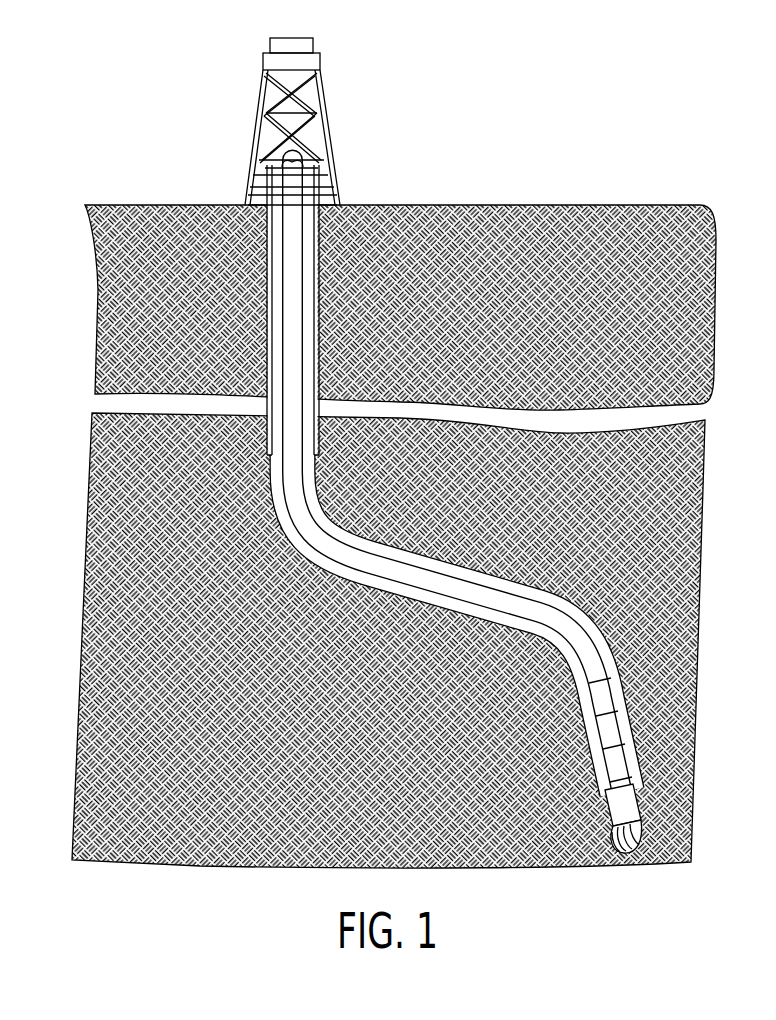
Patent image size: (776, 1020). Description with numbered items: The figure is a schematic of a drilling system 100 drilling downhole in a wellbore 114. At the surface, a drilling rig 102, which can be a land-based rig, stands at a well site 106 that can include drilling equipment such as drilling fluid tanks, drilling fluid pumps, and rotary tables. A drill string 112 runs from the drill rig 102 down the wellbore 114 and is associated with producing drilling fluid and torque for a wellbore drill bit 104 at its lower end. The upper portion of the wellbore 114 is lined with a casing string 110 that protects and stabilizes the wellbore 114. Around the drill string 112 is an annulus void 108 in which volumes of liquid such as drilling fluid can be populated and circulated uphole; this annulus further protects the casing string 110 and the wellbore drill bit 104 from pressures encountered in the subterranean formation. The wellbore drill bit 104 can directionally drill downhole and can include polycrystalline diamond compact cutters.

The drilling system 100 is at (396, 449).
The drilling rig 102 is at (243, 109).
The wellbore drill bit 104 is at (652, 778).
The well site 106 is at (326, 191).
The annulus void 108 is at (277, 278).
The casing string 110 is at (271, 312).
The drill string 112 is at (307, 301).
The wellbore 114 is at (482, 524).